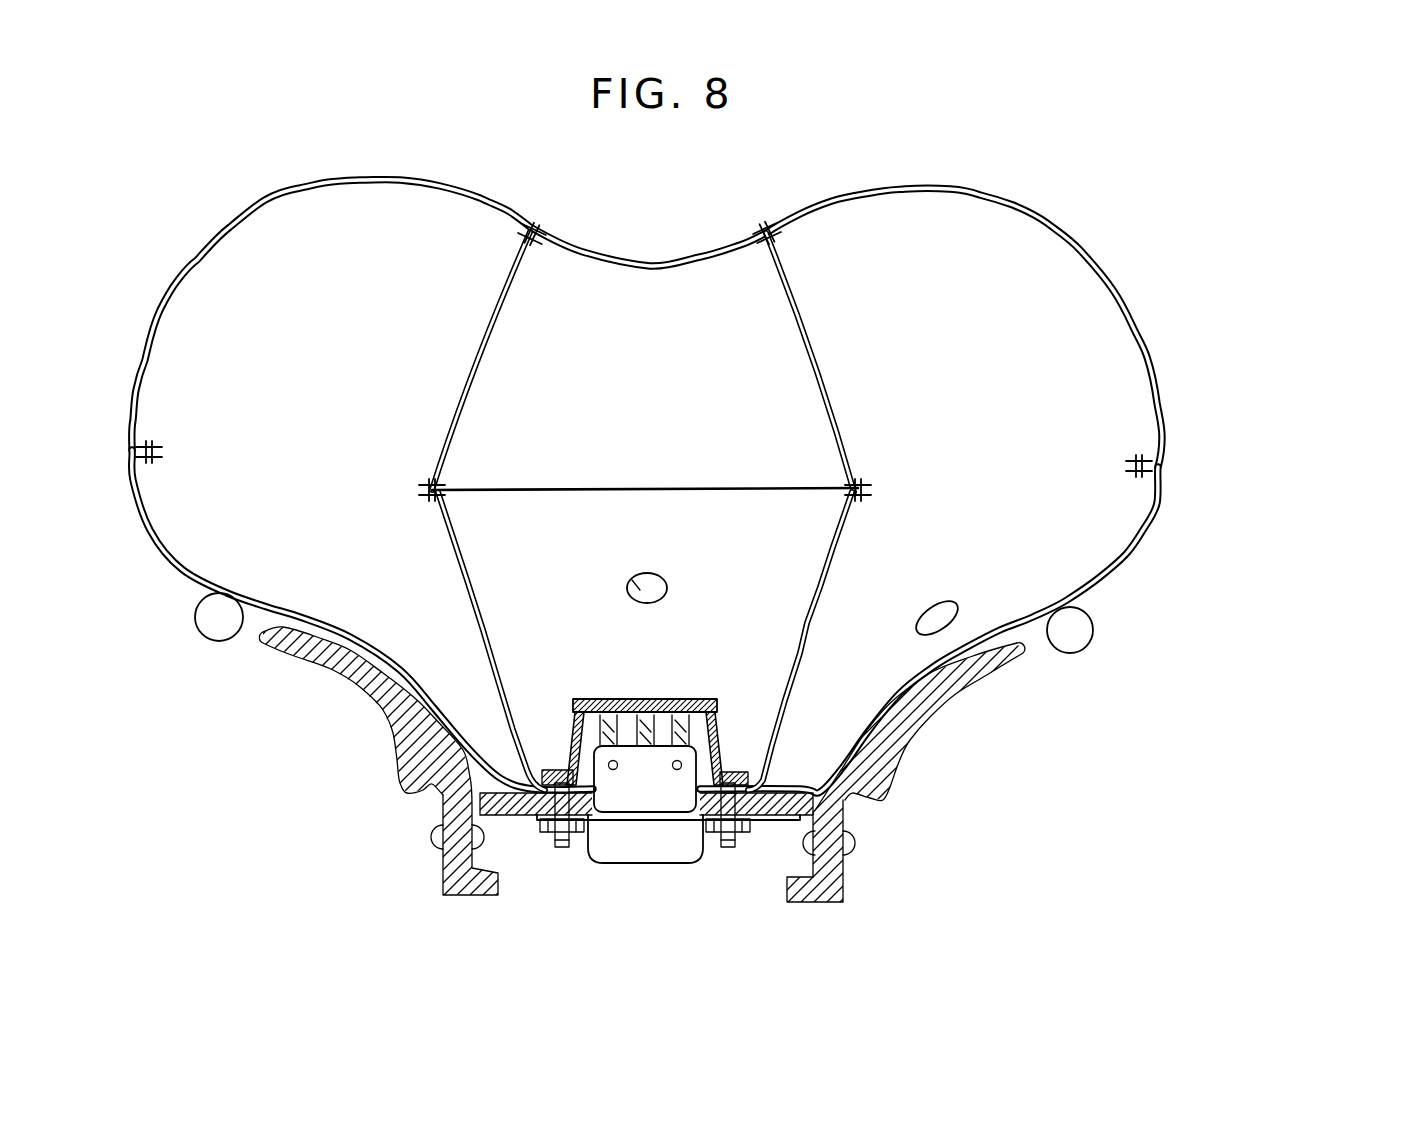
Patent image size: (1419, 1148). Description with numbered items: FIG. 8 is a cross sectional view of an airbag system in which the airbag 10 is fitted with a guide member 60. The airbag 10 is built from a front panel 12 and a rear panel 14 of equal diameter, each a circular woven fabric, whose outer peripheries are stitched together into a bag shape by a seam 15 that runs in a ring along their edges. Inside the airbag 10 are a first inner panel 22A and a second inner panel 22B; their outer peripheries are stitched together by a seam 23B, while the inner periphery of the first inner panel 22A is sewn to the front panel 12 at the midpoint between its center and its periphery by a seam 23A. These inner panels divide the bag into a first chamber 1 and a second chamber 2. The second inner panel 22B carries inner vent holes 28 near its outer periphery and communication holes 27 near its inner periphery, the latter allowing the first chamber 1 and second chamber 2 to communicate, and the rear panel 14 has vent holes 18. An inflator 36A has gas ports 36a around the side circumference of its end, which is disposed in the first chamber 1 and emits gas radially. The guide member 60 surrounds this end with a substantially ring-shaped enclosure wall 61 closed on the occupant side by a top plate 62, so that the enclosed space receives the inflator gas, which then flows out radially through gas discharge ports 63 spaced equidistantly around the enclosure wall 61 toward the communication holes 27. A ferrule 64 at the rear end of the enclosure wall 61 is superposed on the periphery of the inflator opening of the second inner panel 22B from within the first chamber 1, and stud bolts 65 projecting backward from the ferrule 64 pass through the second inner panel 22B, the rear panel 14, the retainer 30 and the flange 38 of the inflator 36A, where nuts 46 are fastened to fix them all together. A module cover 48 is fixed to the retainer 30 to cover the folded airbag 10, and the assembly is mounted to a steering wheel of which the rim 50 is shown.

The first chamber 1 is at (636, 457).
The second chamber 2 is at (275, 466).
The airbag 10 is at (752, 485).
The front panel 12 is at (1128, 318).
The rear panel 14 is at (1129, 556).
The seam 15 is at (152, 462).
The vent hole 18 is at (955, 613).
The first inner panel 22A is at (496, 327).
The second inner panel 22B is at (452, 520).
The seam 23A is at (536, 230).
The seam 23B is at (860, 488).
The communication hole 27 is at (513, 745).
The inner vent hole 28 is at (850, 597).
The retainer 30 is at (828, 812).
The gas port 36a is at (664, 792).
The inflator 36A is at (656, 858).
The flange 38 is at (600, 821).
The nut 46 is at (530, 838).
The module cover 48 is at (316, 670).
The rim 50 is at (223, 642).
The guide member 60 is at (656, 668).
The enclosure wall 61 is at (720, 748).
The top plate 62 is at (675, 699).
The gas discharge port 63 is at (577, 705).
The ferrule 64 is at (550, 765).
The stud bolt 65 is at (563, 848).